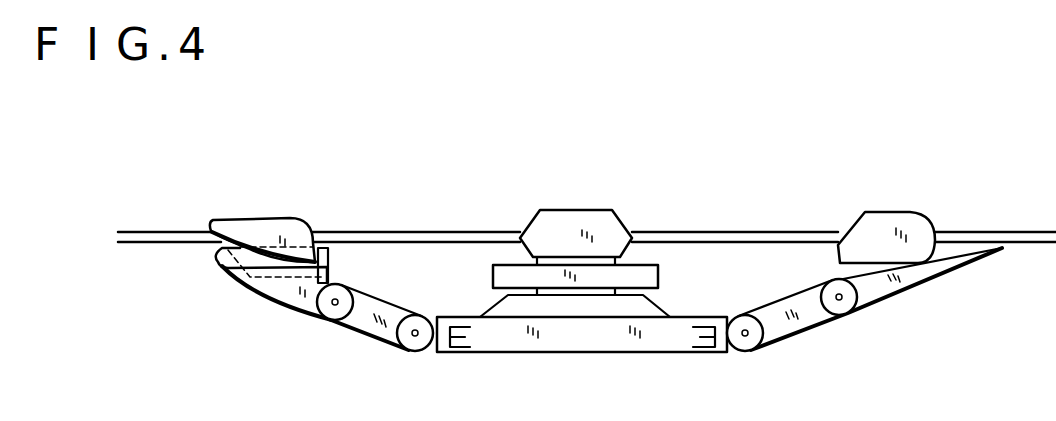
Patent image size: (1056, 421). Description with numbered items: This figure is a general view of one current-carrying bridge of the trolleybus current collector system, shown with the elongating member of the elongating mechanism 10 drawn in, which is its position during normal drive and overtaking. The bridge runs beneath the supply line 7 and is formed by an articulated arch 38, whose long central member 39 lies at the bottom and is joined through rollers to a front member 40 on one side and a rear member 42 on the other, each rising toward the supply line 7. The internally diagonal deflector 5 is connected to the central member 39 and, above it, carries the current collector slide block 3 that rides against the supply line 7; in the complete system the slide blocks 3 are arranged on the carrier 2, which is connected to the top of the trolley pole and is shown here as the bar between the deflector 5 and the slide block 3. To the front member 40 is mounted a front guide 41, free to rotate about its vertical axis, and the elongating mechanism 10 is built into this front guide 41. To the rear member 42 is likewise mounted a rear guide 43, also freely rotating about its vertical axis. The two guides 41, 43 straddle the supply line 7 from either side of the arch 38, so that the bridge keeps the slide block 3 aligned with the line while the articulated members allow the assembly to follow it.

The carrier 2 is at (507, 277).
The current collector slide block 3 is at (567, 225).
The internally diagonal deflector 5 is at (650, 306).
The supply line 7 is at (1042, 232).
The elongating mechanism 10 is at (330, 260).
The articulated arch 38 is at (727, 338).
The central member 39 is at (563, 335).
The front member 40 is at (292, 293).
The front guide 41 is at (267, 228).
The rear member 42 is at (818, 307).
The rear guide 43 is at (880, 232).